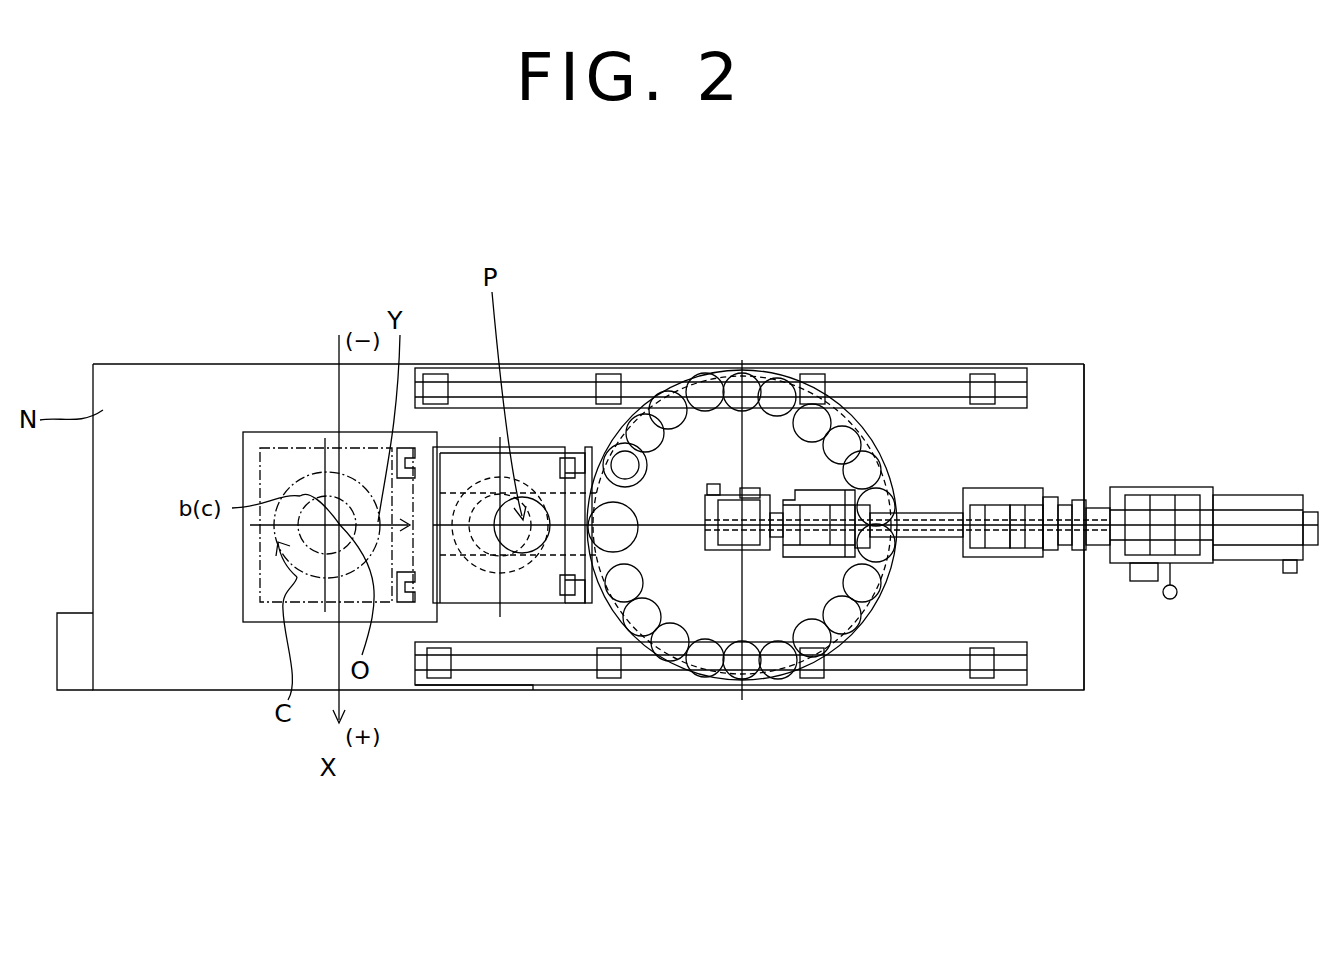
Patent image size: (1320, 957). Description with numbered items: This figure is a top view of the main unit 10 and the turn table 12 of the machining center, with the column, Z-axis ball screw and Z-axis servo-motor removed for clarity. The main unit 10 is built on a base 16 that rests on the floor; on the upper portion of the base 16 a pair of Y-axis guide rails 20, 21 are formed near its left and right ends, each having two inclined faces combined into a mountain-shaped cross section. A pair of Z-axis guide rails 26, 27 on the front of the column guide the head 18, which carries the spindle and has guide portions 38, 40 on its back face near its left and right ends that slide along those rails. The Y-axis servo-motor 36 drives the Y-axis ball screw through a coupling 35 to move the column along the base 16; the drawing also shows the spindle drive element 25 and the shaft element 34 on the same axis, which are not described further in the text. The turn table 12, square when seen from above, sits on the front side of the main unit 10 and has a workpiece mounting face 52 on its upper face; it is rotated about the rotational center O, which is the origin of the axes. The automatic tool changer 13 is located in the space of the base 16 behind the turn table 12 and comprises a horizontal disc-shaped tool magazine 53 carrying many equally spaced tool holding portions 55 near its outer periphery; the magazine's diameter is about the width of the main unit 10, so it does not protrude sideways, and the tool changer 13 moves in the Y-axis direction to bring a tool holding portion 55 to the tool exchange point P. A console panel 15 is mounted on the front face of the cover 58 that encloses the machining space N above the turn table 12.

The main unit 10 is at (862, 362).
The turn table 12 is at (270, 426).
The automatic tool changer (ATC) 13 is at (882, 448).
The console panel 15 is at (76, 613).
The base 16 is at (1083, 423).
The head 18 is at (296, 448).
The guide rail 20 is at (920, 382).
The guide rail 21 is at (935, 686).
The spindle head 25 is at (998, 490).
The guide rail 26 is at (588, 456).
The guide rail 27 is at (582, 603).
The coupling 34 is at (985, 548).
The coupling 35 is at (1162, 487).
The Y-axis servo-motor 36 is at (1258, 495).
The guide portion 38 is at (549, 468).
The guide portion 40 is at (563, 592).
The workpiece mounting face 52 is at (245, 612).
The tool magazine 53 is at (703, 623).
The tool holding portion 55 is at (878, 477).
The cover 58 is at (148, 364).